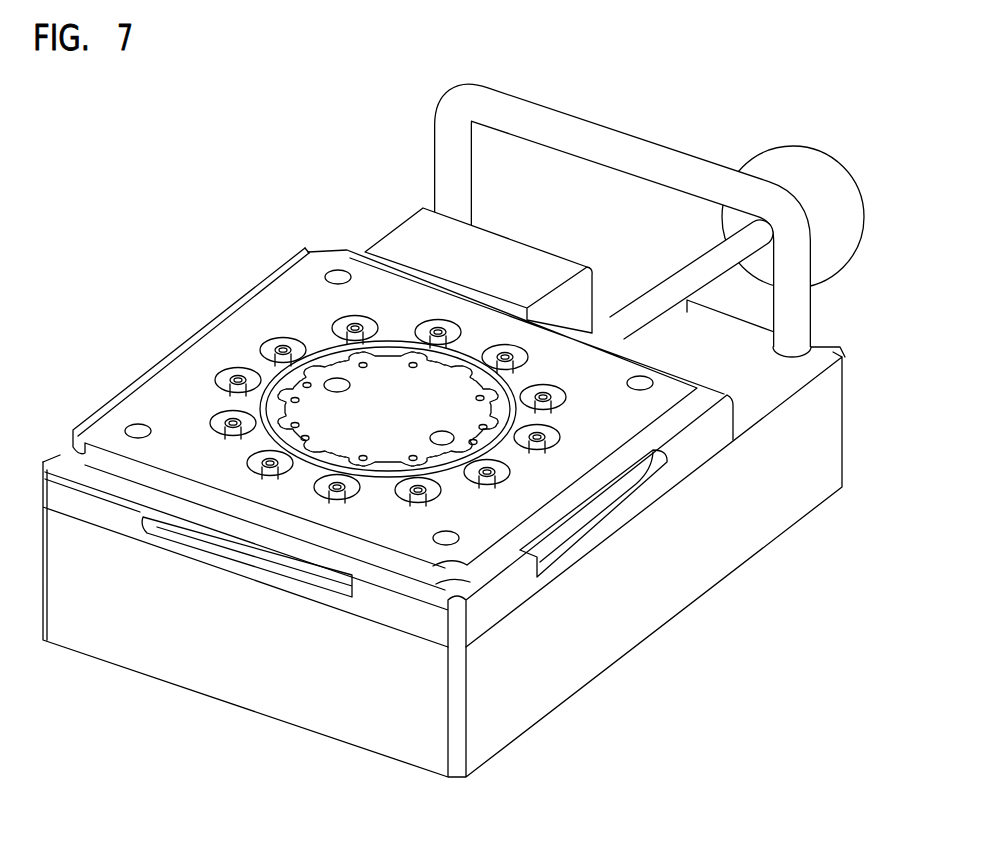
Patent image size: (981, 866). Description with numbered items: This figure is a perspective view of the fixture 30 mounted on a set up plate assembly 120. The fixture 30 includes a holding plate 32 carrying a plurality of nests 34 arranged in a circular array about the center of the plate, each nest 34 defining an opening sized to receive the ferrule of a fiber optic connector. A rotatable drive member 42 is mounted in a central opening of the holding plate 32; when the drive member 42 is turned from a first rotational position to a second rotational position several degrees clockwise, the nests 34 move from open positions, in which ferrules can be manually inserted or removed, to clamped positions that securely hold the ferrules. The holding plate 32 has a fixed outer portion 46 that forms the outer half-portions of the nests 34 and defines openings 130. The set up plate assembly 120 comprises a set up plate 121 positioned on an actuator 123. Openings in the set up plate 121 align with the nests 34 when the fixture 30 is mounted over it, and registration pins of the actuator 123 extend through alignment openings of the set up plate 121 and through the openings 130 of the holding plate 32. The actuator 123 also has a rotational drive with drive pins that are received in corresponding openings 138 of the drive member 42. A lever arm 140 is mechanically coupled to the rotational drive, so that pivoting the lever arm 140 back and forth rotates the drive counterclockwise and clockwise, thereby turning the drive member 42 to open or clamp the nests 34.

The fixture 30 is at (398, 381).
The holding plate 32 is at (290, 295).
The nests 34 is at (540, 440).
The drive member 42 is at (323, 442).
The fixed outer portion 46 is at (349, 406).
The set up plate assembly 120 is at (455, 538).
The set up plate 121 is at (385, 610).
The actuator 123 is at (763, 515).
The openings 130 is at (640, 382).
The openings 138 is at (441, 436).
The lever arm 140 is at (700, 263).